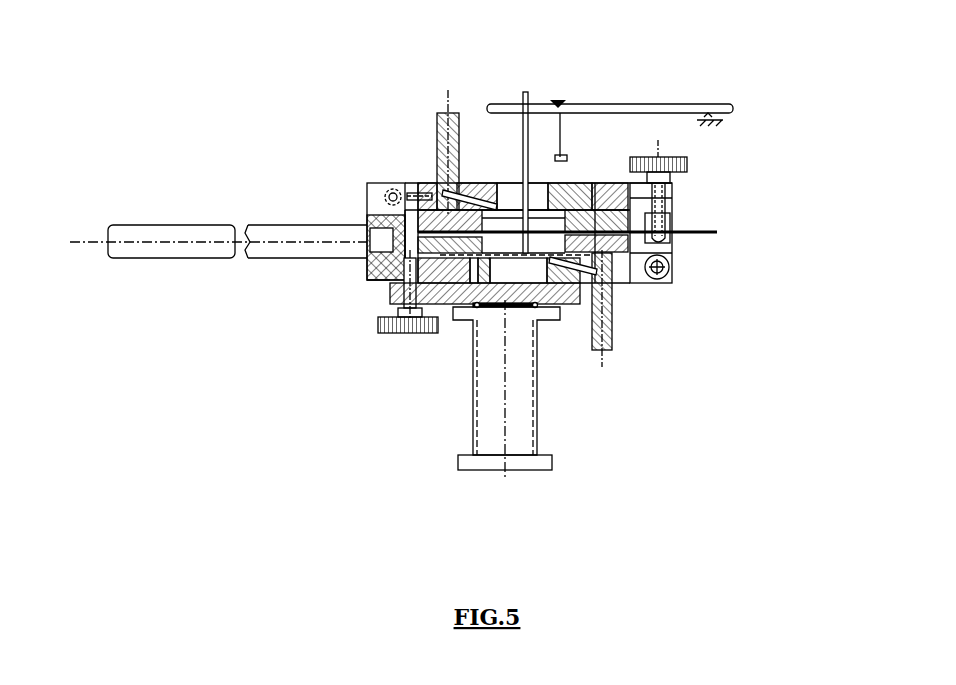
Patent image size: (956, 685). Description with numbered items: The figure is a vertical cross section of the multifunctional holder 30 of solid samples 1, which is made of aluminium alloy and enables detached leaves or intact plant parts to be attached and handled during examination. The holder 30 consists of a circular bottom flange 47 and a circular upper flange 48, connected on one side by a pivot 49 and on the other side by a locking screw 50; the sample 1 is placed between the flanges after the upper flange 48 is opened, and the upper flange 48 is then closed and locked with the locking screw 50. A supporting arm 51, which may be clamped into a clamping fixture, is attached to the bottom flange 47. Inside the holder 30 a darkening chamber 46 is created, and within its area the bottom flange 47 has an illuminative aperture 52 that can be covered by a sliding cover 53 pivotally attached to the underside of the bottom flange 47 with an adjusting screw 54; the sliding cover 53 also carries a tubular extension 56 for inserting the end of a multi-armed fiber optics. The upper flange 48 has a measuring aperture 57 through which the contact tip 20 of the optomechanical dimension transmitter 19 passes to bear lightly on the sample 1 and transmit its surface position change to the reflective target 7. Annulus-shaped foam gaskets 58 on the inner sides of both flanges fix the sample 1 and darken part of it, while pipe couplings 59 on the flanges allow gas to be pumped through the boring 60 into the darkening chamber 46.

The solid sample 1 is at (717, 232).
The reflective target 7 is at (560, 100).
The optomechanical dimension transmitter 19 is at (683, 107).
The contact tip 20 is at (523, 138).
The multifunctional holder 30 is at (345, 153).
The darkening chamber 46 is at (553, 283).
The bottom flange 47 is at (384, 268).
The upper flange 48 is at (590, 205).
The pivot 49 is at (397, 183).
The locking screw 50 is at (688, 163).
The supporting arm 51 is at (157, 252).
The illuminative aperture 52 is at (488, 307).
The sliding cover 53 is at (385, 300).
The adjusting screw 54 is at (405, 333).
The tubular extension 56 is at (475, 408).
The measuring aperture 57 is at (578, 137).
The gasket 58 is at (622, 230).
The pipe coupling 59 is at (440, 137).
The boring 60 is at (473, 190).